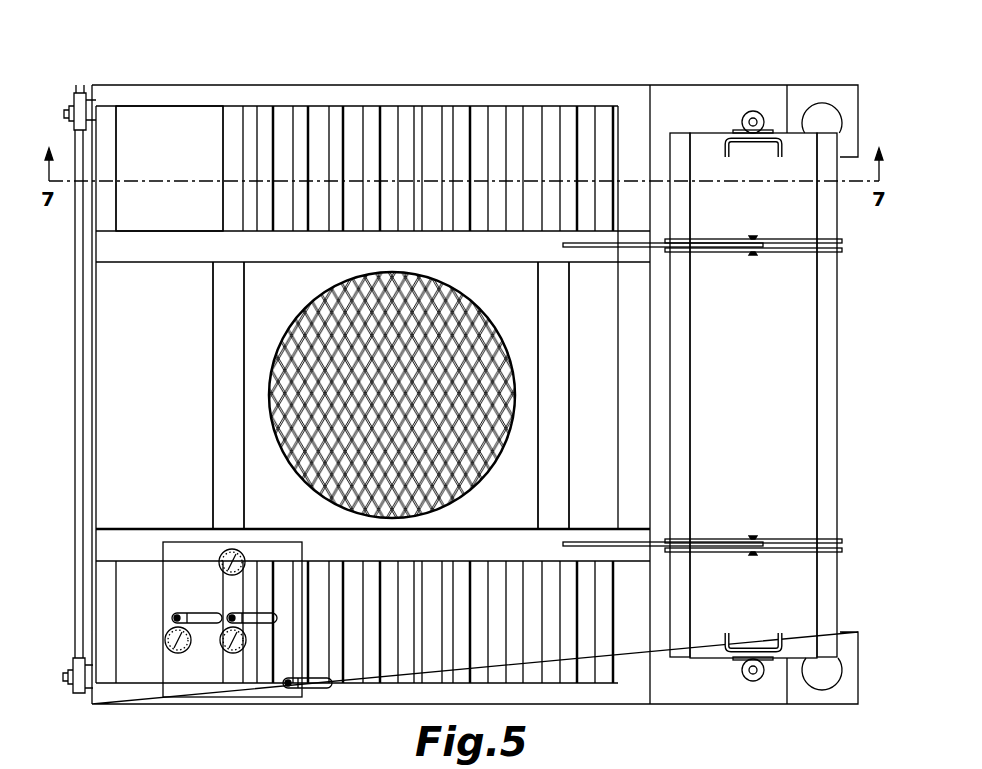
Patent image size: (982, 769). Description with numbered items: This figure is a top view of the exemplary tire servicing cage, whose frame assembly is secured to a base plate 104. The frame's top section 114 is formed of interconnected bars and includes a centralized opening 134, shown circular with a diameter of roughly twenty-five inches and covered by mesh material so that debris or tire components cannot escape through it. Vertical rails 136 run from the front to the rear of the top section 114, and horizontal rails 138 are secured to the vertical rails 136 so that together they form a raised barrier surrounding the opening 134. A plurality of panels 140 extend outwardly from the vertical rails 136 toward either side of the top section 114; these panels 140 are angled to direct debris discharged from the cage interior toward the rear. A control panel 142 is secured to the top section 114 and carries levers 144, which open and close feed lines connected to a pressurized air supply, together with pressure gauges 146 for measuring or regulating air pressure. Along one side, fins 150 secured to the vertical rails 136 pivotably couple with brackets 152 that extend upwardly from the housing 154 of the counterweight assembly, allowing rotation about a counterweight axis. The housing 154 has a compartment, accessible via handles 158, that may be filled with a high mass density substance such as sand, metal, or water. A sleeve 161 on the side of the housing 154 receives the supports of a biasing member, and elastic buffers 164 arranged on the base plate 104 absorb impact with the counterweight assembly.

The base plate 104 is at (667, 690).
The top section 114 is at (150, 125).
The centralized opening 134 is at (430, 275).
The vertical rails 136 is at (95, 250).
The horizontal rails 138 is at (218, 402).
The panels 140 is at (303, 117).
The control panel 142 is at (184, 687).
The levers 144 is at (316, 688).
The pressure gauges 146 is at (232, 654).
The fins 150 is at (657, 248).
The brackets 152 is at (827, 257).
The housing 154 is at (771, 414).
The handles 158 is at (727, 146).
The sleeve 161 is at (753, 110).
The buffers 164 is at (822, 112).